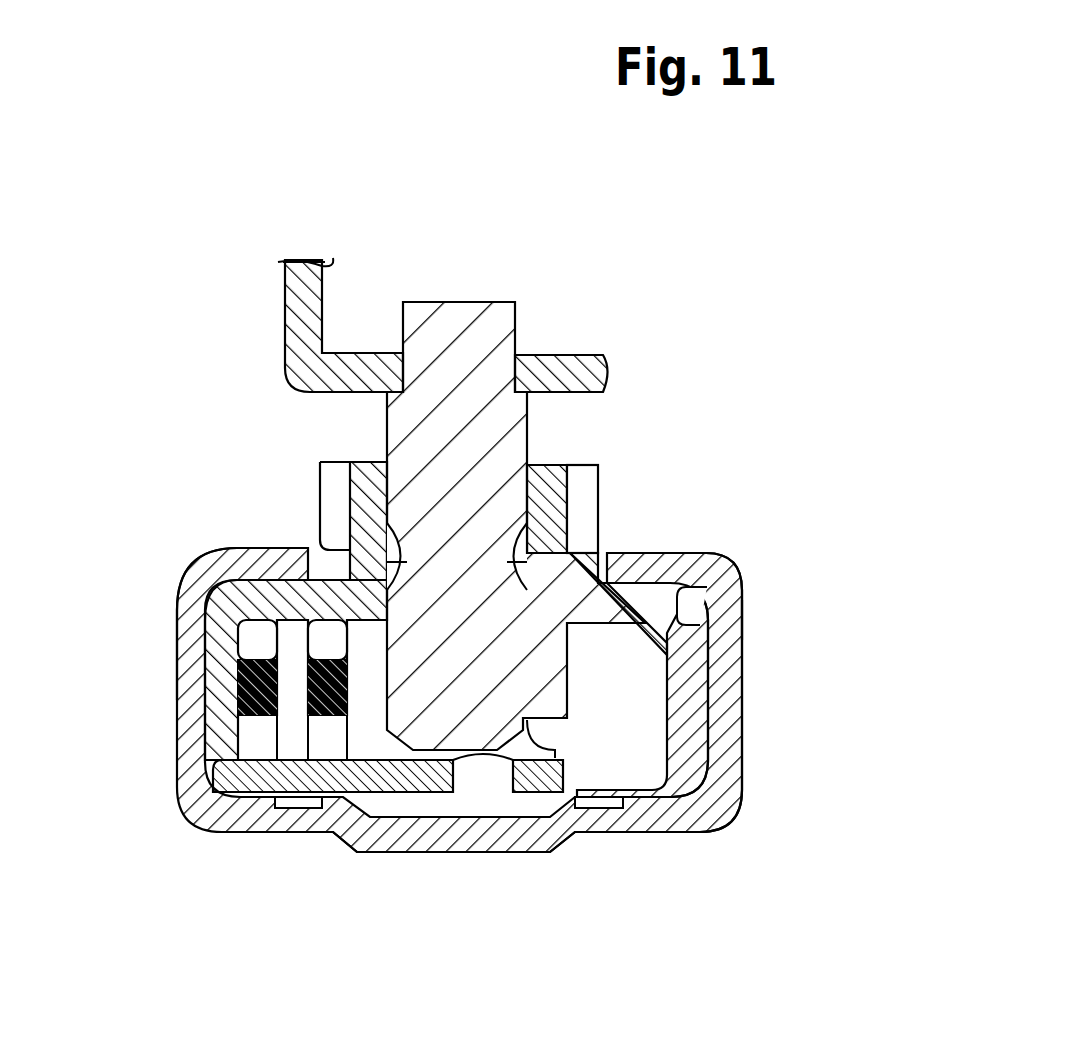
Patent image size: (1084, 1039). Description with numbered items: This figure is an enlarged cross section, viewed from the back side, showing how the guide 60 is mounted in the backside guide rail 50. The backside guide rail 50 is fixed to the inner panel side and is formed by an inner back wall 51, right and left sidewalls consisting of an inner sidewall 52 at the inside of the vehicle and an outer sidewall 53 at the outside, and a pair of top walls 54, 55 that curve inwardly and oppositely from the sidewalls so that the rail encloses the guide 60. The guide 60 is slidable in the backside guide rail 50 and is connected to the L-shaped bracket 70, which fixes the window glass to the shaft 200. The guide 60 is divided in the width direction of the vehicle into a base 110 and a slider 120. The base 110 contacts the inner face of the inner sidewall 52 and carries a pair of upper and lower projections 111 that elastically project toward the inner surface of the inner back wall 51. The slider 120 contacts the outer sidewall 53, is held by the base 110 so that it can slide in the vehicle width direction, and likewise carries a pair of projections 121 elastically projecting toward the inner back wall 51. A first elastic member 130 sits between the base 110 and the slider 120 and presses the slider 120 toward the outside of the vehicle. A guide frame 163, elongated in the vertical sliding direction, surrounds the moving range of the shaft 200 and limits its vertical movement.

The backside guide rail 50 is at (742, 832).
The inner back wall 51 is at (452, 850).
The inner sidewall 52 is at (745, 665).
The outer sidewall 53 is at (177, 608).
The top wall 54 is at (640, 560).
The top wall 55 is at (297, 548).
The guide 60 is at (322, 201).
The bracket 70 is at (288, 328).
The base 110 is at (700, 735).
The projections 111 is at (593, 810).
The slider 120 is at (212, 798).
The projections 121 is at (295, 810).
The first elastic member 130 is at (238, 690).
The guide frame 163 is at (540, 480).
The shaft 200 is at (462, 320).